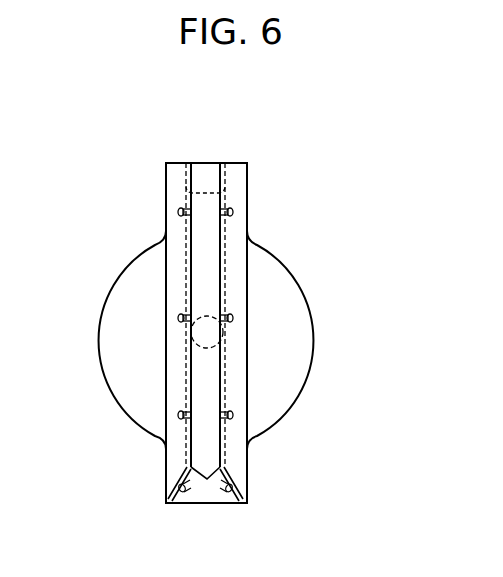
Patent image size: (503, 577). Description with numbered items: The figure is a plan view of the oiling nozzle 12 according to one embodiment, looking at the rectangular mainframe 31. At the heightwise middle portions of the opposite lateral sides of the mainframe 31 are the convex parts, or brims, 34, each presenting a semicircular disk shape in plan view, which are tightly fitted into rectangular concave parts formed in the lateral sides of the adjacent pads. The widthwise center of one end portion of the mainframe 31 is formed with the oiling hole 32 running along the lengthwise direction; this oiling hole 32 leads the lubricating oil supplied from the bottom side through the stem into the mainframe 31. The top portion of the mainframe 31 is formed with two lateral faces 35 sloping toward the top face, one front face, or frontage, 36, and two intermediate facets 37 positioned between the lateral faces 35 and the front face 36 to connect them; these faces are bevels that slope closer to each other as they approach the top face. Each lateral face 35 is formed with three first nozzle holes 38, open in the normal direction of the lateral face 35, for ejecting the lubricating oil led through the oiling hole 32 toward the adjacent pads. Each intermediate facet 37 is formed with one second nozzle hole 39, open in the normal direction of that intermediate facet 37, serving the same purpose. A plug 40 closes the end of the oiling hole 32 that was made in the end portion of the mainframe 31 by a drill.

The oiling nozzle 12 is at (300, 262).
The mainframe 31 is at (166, 190).
The oiling hole 32 is at (195, 290).
The convex part (brim) 34 is at (120, 332).
The lateral face 35 is at (247, 192).
The front face (frontage) 36 is at (205, 503).
The intermediate facet 37 is at (172, 503).
The nozzle hole (first nozzle hole) 38 is at (170, 418).
The nozzle hole (second nozzle hole) 39 is at (182, 490).
The plug 40 is at (207, 185).